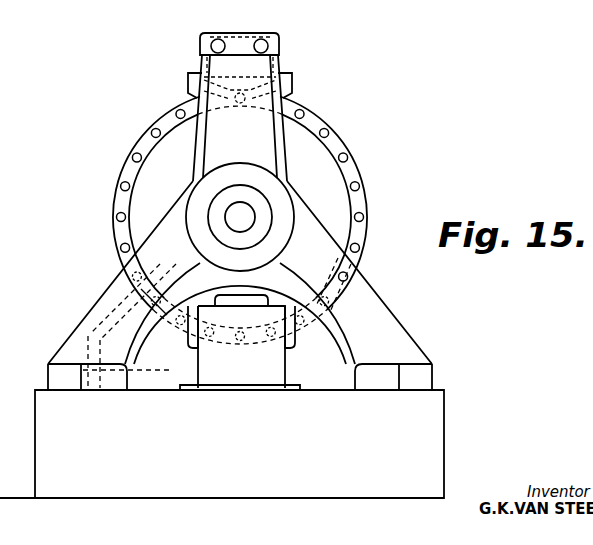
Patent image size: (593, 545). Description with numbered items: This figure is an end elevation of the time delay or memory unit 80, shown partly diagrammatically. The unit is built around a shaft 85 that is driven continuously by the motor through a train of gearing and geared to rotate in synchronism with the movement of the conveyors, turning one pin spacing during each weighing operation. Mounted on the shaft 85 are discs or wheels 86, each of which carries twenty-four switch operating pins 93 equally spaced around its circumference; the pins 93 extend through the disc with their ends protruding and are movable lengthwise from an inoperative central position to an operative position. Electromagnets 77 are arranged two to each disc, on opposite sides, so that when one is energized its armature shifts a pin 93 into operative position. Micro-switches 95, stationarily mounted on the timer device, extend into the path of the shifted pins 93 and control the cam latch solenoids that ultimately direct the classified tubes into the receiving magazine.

The time delay or memory unit 80 is at (346, 107).
The discs or wheels 86 is at (337, 143).
The switch operating pins 93 is at (359, 190).
The micro-switches 95 is at (198, 79).
The shaft 85 is at (242, 211).
The electromagnets 77 is at (257, 286).